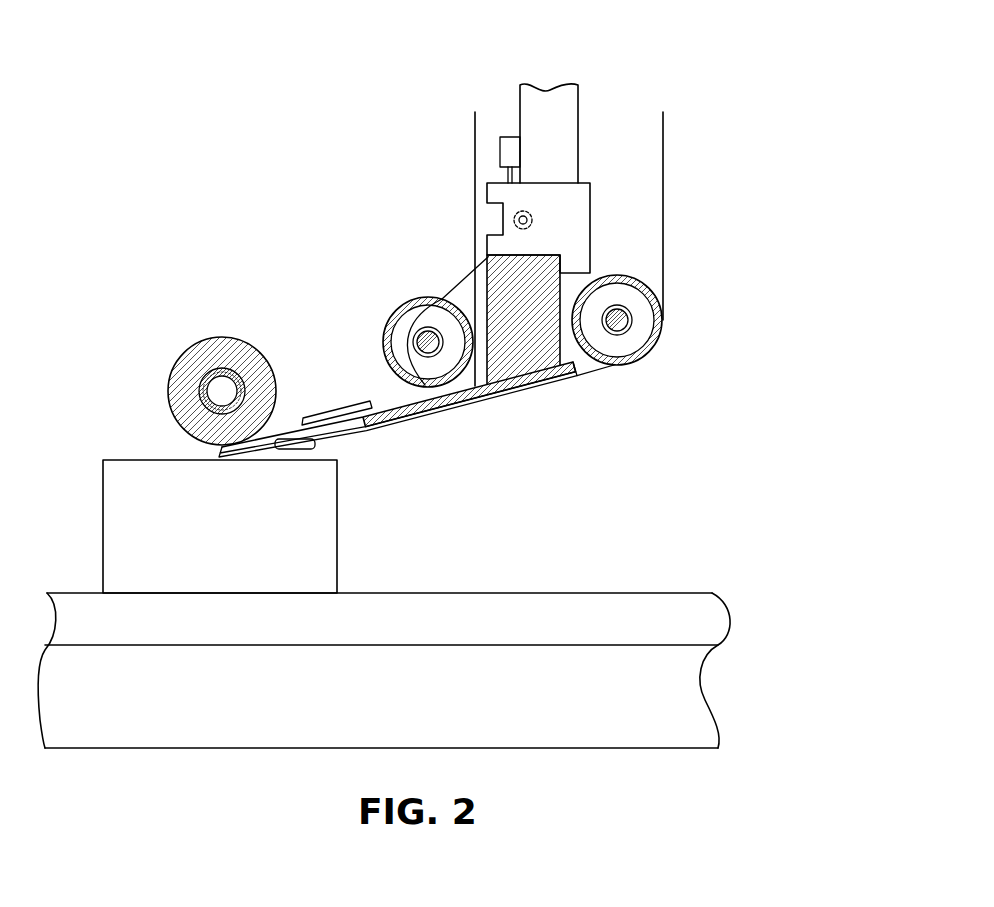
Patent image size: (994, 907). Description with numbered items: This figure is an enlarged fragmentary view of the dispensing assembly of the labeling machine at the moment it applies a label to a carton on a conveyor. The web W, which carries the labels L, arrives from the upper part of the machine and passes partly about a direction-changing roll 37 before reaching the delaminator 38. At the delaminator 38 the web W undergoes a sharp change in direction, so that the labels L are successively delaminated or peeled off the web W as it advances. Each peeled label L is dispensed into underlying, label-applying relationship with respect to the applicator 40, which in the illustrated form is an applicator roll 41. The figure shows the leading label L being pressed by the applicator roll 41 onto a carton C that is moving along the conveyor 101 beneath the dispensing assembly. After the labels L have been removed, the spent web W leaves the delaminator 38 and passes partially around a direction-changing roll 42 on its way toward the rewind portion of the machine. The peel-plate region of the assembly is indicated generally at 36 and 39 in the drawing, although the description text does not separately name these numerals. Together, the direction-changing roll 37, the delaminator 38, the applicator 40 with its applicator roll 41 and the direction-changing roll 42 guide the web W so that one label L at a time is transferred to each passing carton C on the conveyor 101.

The label applicator unit 36 is at (598, 400).
The direction-changing roll 37 is at (393, 313).
The delaminator 38 is at (293, 450).
The peel plate 39 is at (402, 430).
The applicator 40 is at (200, 330).
The applicator roll 41 is at (243, 363).
The direction-changing roll 42 is at (641, 283).
The conveyor 101 is at (712, 592).
The web W is at (475, 193).
The label L is at (323, 414).
The carton C is at (327, 552).